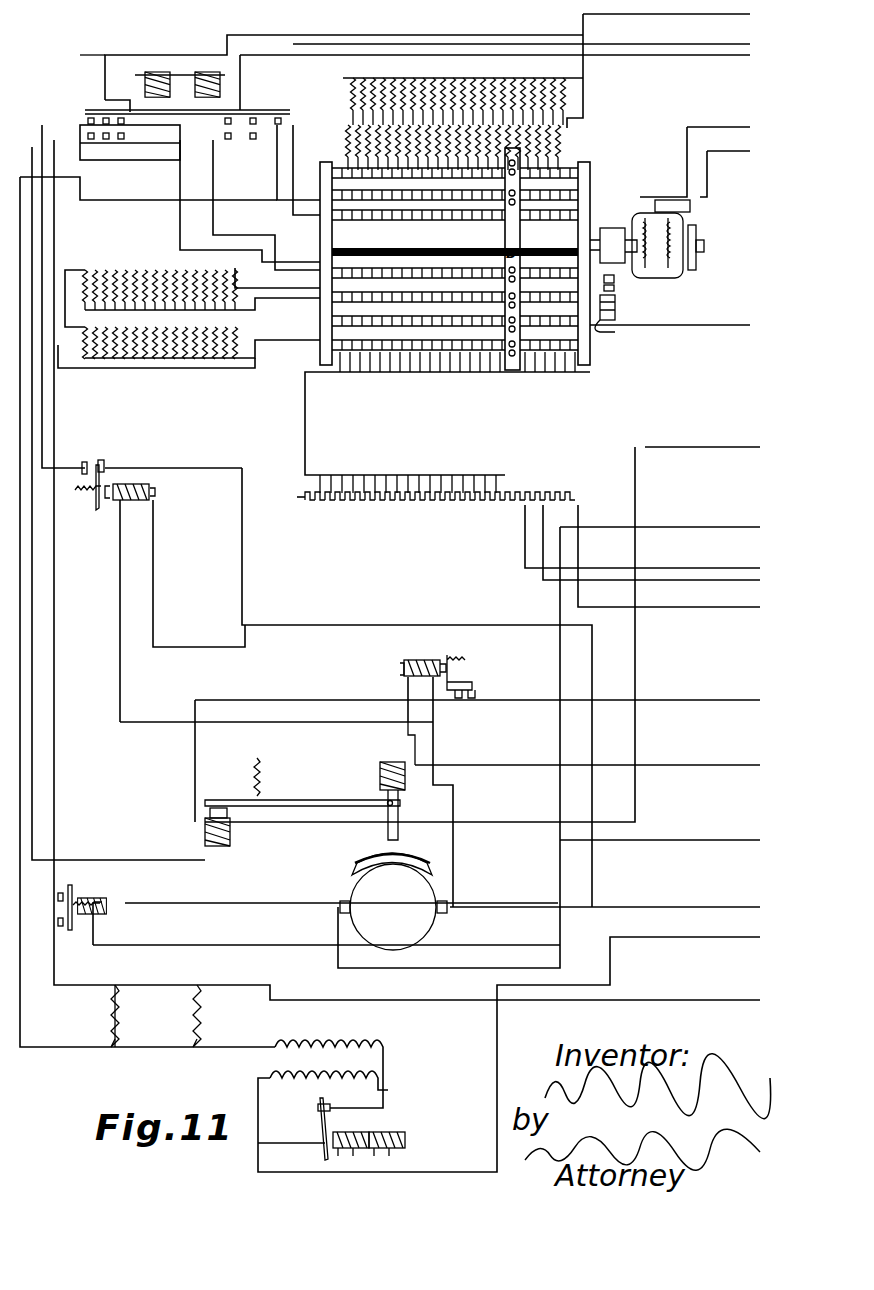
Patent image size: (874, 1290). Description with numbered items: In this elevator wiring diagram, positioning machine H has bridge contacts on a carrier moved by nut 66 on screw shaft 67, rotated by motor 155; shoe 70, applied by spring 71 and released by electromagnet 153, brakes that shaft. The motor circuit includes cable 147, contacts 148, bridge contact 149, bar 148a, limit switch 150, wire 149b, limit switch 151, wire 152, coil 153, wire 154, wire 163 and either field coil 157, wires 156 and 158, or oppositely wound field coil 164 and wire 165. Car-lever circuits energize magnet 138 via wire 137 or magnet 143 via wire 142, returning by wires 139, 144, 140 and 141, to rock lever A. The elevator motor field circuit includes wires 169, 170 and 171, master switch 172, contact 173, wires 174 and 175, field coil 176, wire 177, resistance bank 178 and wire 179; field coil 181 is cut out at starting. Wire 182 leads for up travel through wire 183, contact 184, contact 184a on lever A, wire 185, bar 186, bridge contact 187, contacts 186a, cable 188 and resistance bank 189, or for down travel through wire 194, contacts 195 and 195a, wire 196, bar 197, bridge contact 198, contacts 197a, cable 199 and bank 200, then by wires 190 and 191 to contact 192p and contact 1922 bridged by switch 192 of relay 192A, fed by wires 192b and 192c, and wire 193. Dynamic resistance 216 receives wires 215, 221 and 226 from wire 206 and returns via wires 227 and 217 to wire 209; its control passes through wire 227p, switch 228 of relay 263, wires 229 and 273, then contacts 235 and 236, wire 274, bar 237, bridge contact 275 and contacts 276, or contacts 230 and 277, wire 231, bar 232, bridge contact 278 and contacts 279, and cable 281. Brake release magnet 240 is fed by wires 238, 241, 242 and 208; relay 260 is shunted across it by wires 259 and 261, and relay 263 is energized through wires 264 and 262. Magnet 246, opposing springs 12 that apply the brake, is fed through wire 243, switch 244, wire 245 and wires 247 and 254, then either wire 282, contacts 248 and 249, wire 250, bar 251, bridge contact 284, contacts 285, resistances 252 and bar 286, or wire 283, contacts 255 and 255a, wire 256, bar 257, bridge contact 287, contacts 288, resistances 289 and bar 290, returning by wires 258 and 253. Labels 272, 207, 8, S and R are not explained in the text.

The wire 137 is at (105, 55).
The wire 139 is at (185, 75).
The wire 196 is at (105, 85).
The magnet 138 is at (142, 87).
The contact 249 is at (95, 118).
The contact 195a is at (105, 118).
The contact 230 is at (120, 118).
The wire 273 is at (54, 125).
The wire 254 is at (46, 146).
The contact 277 is at (92, 139).
The contact 248 is at (107, 139).
The wire 282 is at (120, 140).
The wire 194 is at (128, 152).
The contact 195 is at (125, 137).
The insulated contact 184a is at (225, 124).
The contact 184 is at (225, 136).
The wire 283 is at (225, 140).
The contact 255a is at (253, 139).
The contact 255 is at (252, 118).
The wire 256 is at (258, 118).
The contact 235 is at (278, 118).
The contact 236 is at (295, 118).
The wire 183 is at (223, 152).
The wire 144 is at (215, 84).
The magnet 143 is at (220, 100).
The wire 140 is at (413, 35).
The wire 141 is at (765, 13).
The wire 253 is at (583, 33).
The wire 142 is at (769, 55).
The bar 286 is at (583, 66).
The wire 258 is at (583, 90).
The bar 290 is at (583, 108).
The resistances 289 is at (570, 130).
The resistances 252 is at (475, 77).
The row of contacts 288 is at (345, 142).
The position machine bar 257 is at (330, 165).
The position machine bar 251 is at (304, 214).
The row of contacts 285 is at (284, 185).
The wire 274 is at (277, 187).
The conductor 272 is at (80, 200).
The wire 182 is at (125, 197).
The wire 250 is at (80, 209).
The wire 231 is at (55, 232).
The wire 185 is at (213, 218).
The row of contacts 186a is at (320, 272).
The position machine bar 186 is at (320, 260).
The wire 190 is at (78, 258).
The resistance bank 189 is at (152, 268).
The cable 188 is at (160, 316).
The position machine bar 197 is at (320, 305).
The row of contacts 197a is at (320, 315).
The position machine bar 237 is at (320, 335).
The row of contacts 276 is at (320, 348).
The position machine bar 232 is at (320, 360).
The row of contacts 279 is at (318, 372).
The cable 199 is at (185, 358).
The resistance bank 200 is at (196, 352).
The limit switch 150 is at (340, 238).
The wire 149b is at (404, 245).
The bridge contact 187 is at (472, 236).
The limit switch 151 is at (538, 236).
The screw shaft 67 is at (430, 258).
The nut 66 is at (539, 267).
The cable 281 is at (425, 373).
The positioning machine H is at (538, 381).
The bridge contact 287 is at (580, 156).
The bridge contact 284 is at (580, 172).
The bridge contact 149 is at (580, 187).
The row of contacts 148 is at (580, 200).
The bar 148a is at (580, 215).
The bridge contact 198 is at (585, 230).
The wire 169 is at (613, 243).
The shoe 70 is at (620, 277).
The coil spring 71 is at (620, 289).
The brake electromagnet 153 is at (615, 305).
The wire 152 is at (613, 321).
The bridge contact 275 is at (590, 335).
The bridge contact 278 is at (590, 364).
The cable 147 is at (774, 325).
The wire 154 is at (660, 280).
The wire 156 is at (674, 198).
The wire 163 is at (690, 206).
The electric motor 155 is at (695, 235).
The field coil 164 is at (705, 247).
The field coil 157 is at (688, 258).
The wire 158 is at (773, 127).
The wire 165 is at (773, 151).
The wire 191 is at (55, 431).
The wire 229 is at (70, 466).
The relay switch 228 is at (94, 491).
The relay 263 is at (155, 490).
The wire 227p is at (167, 469).
The wire 227 is at (265, 497).
The dynamic resistance 216 is at (430, 519).
The wire 215 is at (525, 535).
The wire 221 is at (543, 548).
The wire 217 is at (242, 565).
The wire 192b is at (200, 903).
The wire 206 is at (436, 968).
The wire 226 is at (773, 607).
The wire 247 is at (33, 647).
The wire 262 is at (120, 677).
The wire 264 is at (265, 650).
The wire 245 is at (270, 700).
The relay 260 is at (425, 645).
The switch 244 is at (470, 685).
The wire 243 is at (773, 697).
The wire 259 is at (405, 732).
The wire 261 is at (433, 747).
The wire 238 is at (773, 765).
The brake release magnet 240 is at (380, 775).
The wire 242 is at (446, 786).
The wire 241 is at (392, 804).
The springs 12 is at (255, 765).
The magnet 246 is at (198, 833).
The wire 192c is at (197, 947).
The wire 209 is at (773, 907).
The wire 208 is at (500, 910).
The wire 170 is at (345, 1180).
The wire 179 is at (246, 985).
The motor 207 is at (393, 907).
The brush 8 is at (350, 863).
The switch 192 is at (56, 912).
The contact 192p is at (70, 895).
The relay 192A is at (121, 899).
The contact 1922 is at (67, 930).
The wire 193 is at (80, 985).
The resistance bank 178 is at (195, 1018).
The wire 177 is at (200, 1050).
The field coil 176 is at (335, 1041).
The wire 175 is at (393, 1066).
The field coil 181 is at (318, 1086).
The wire 174 is at (391, 1096).
The contact 173 is at (318, 1106).
The master magnet switch 172 is at (320, 1109).
The wire 171 is at (300, 1143).
The coil S is at (351, 1146).
The coil R is at (387, 1146).
The lever A is at (182, 85).